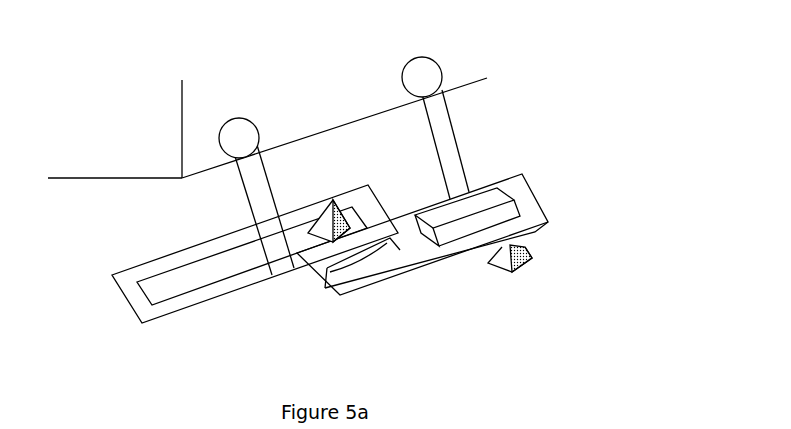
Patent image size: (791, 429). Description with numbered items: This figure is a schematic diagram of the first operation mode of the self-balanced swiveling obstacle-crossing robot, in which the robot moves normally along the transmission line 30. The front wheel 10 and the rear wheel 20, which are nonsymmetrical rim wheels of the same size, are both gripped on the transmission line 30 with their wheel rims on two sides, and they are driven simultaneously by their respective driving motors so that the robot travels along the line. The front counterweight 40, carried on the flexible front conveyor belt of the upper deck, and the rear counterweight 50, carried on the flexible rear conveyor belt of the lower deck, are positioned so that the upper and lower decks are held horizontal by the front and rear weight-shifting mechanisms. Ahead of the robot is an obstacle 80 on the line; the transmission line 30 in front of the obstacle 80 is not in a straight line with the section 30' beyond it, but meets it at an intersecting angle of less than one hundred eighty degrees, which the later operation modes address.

The front wheel 10 is at (232, 118).
The rear wheel 20 is at (437, 54).
The transmission line 30 is at (334, 89).
The horizontal plane 30' is at (115, 99).
The front counterweight 40 is at (318, 240).
The rear counterweight 50 is at (518, 273).
The obstacle 80 is at (182, 112).